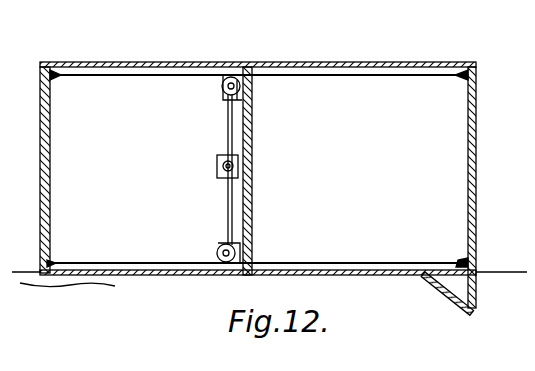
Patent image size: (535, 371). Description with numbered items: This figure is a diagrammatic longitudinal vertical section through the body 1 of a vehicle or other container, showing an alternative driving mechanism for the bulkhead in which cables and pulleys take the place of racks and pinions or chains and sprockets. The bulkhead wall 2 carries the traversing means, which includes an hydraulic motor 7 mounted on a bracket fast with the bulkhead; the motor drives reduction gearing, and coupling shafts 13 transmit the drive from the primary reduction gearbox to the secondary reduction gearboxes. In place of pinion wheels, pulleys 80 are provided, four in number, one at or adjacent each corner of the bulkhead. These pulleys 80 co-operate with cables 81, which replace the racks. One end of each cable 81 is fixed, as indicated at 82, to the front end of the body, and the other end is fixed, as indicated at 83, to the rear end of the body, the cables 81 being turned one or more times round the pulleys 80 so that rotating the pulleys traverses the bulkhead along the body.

The frame 1 is at (143, 62).
The bulkhead wall 2 is at (253, 117).
The hydraulic motor 7 is at (217, 170).
The coupling shafts 13 is at (228, 132).
The pulleys 80 is at (223, 91).
The cables 81 is at (370, 76).
The cable fixing at front end 82 is at (54, 78).
The cable fixing at rear end 83 is at (465, 80).